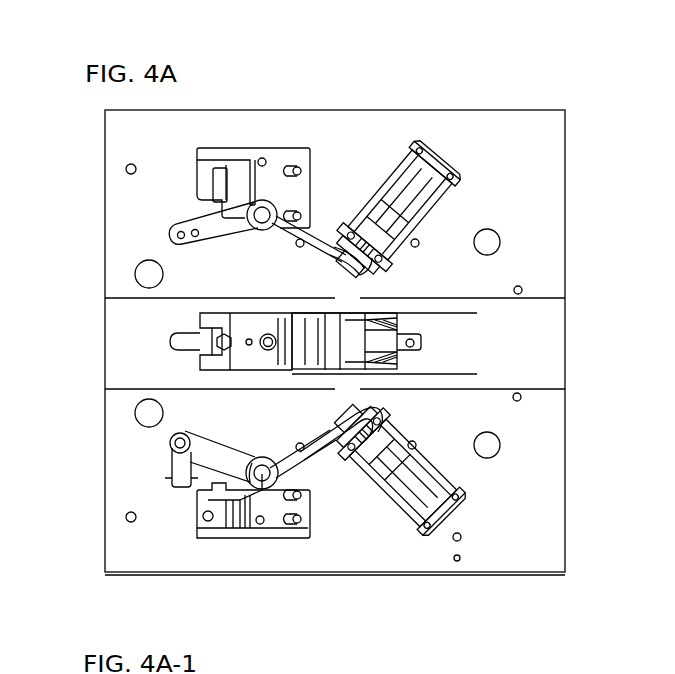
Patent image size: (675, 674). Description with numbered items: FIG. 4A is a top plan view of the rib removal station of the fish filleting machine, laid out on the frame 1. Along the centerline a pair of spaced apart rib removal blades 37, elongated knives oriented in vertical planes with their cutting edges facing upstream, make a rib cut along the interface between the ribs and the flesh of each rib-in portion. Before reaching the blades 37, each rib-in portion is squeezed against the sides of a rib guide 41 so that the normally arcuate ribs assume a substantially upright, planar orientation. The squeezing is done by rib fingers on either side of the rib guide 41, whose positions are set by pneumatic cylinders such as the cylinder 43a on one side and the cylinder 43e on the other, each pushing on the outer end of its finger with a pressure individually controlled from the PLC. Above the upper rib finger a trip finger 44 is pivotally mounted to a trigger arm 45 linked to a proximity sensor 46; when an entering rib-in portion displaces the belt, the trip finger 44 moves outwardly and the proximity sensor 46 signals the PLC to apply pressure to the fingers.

The frame 1 is at (537, 132).
The rib removal blade 37 is at (477, 313).
The rib guide 41 is at (160, 338).
The pneumatic cylinder 43a is at (395, 528).
The pneumatic cylinder 43e is at (392, 156).
The trip finger 44 is at (333, 462).
The trigger arm 45 is at (152, 447).
The proximity sensor 46 is at (240, 520).